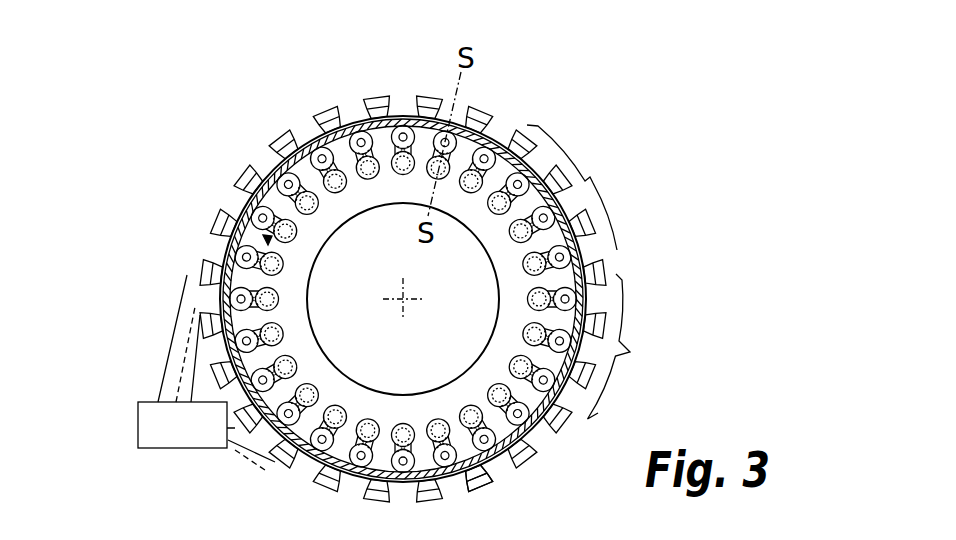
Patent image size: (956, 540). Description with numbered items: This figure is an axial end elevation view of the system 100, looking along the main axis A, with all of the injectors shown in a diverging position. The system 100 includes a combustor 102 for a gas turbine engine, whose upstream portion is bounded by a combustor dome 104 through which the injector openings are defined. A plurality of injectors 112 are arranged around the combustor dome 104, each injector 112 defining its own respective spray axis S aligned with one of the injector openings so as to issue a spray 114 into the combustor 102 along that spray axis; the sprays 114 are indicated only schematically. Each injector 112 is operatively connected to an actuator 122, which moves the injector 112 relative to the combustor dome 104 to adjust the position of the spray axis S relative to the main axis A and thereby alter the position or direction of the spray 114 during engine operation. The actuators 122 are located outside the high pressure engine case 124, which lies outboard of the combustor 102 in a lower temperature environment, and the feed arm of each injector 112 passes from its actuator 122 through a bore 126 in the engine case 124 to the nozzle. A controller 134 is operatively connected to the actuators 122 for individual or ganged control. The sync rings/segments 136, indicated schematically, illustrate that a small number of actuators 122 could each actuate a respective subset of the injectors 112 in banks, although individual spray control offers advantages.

The system 100 is at (526, 73).
The combustor 102 is at (322, 232).
The combustor dome 104 is at (405, 306).
The injector 112 is at (239, 177).
The spray 114 is at (462, 119).
The actuator 122 is at (363, 110).
The high pressure engine case 124 is at (493, 462).
The bore 126 is at (517, 455).
The controller 134 is at (170, 448).
The sync rings/segments 136 is at (589, 176).